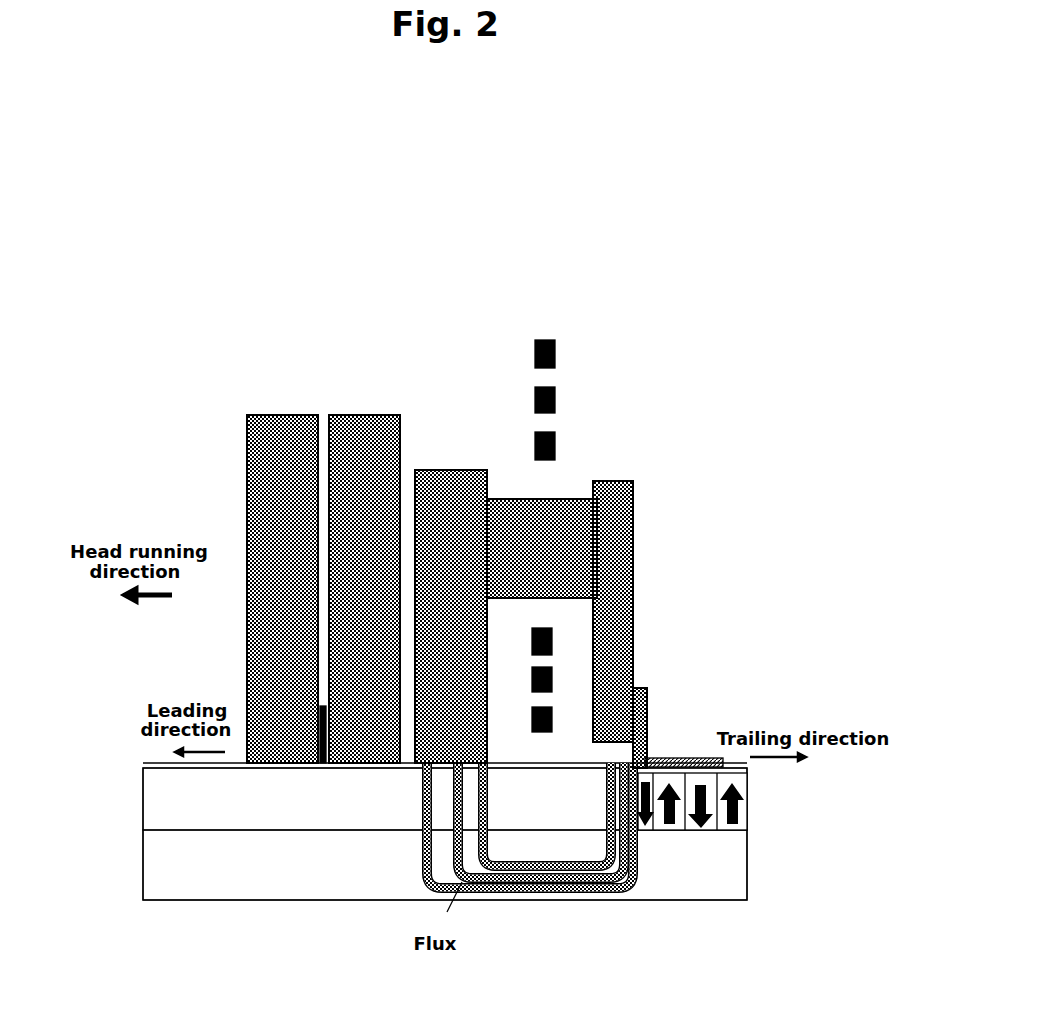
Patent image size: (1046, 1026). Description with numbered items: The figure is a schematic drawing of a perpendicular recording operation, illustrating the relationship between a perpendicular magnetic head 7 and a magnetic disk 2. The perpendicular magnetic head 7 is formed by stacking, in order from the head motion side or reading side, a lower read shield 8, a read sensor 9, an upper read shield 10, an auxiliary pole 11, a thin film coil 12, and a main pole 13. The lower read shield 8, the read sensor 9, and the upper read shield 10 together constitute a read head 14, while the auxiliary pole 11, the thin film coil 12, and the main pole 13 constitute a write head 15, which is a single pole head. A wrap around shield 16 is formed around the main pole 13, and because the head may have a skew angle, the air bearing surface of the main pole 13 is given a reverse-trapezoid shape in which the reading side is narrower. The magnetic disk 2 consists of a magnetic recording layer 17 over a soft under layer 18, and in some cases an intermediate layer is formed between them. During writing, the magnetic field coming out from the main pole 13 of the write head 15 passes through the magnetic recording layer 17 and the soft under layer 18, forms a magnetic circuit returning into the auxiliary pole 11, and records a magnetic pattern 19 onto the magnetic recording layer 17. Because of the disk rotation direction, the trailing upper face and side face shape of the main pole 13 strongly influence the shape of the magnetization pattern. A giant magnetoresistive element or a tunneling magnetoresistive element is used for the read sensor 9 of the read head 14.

The magnetic disk 2 is at (389, 831).
The perpendicular magnetic head 7 is at (640, 256).
The lower read shield 8 is at (275, 428).
The read sensor 9 is at (321, 742).
The upper read shield 10 is at (360, 428).
The auxiliary pole 11 is at (445, 480).
The thin film coil 12 is at (556, 397).
The main pole 13 is at (647, 690).
The read head 14 is at (243, 325).
The write head 15 is at (648, 322).
The wrap around shield 16 is at (686, 756).
The magnetic recording layer 17 is at (148, 790).
The soft under layer 18 is at (422, 865).
The magnetic pattern 19 is at (748, 815).